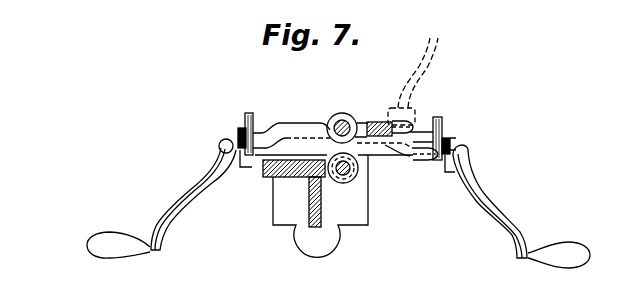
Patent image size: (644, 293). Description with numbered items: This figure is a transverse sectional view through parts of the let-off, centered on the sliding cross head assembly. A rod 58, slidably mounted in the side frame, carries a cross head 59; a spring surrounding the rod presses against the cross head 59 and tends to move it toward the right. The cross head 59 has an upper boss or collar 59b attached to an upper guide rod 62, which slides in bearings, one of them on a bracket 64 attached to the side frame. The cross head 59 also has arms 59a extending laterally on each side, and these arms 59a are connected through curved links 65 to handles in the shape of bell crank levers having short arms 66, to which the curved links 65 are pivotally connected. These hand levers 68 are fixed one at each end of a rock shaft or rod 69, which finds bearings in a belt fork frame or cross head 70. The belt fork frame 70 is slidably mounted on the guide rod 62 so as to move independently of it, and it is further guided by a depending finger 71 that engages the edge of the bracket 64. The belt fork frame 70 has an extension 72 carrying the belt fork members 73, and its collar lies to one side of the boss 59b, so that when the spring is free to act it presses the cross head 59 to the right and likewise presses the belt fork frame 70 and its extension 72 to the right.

The rod 58 is at (358, 171).
The cross head 59 is at (390, 147).
The arms 59a is at (425, 142).
The upper boss or collar 59b is at (343, 116).
The upper guide rod 62 is at (338, 111).
The bracket 64 is at (322, 208).
The curved links 65 is at (250, 113).
The short arms 66 is at (238, 140).
The hand levers 68 is at (158, 221).
The rock shaft or rod 69 is at (218, 148).
The belt fork frame or cross head 70 is at (283, 123).
The depending finger 71 is at (268, 161).
The extension 72 is at (379, 121).
The belt fork members 73 is at (425, 58).